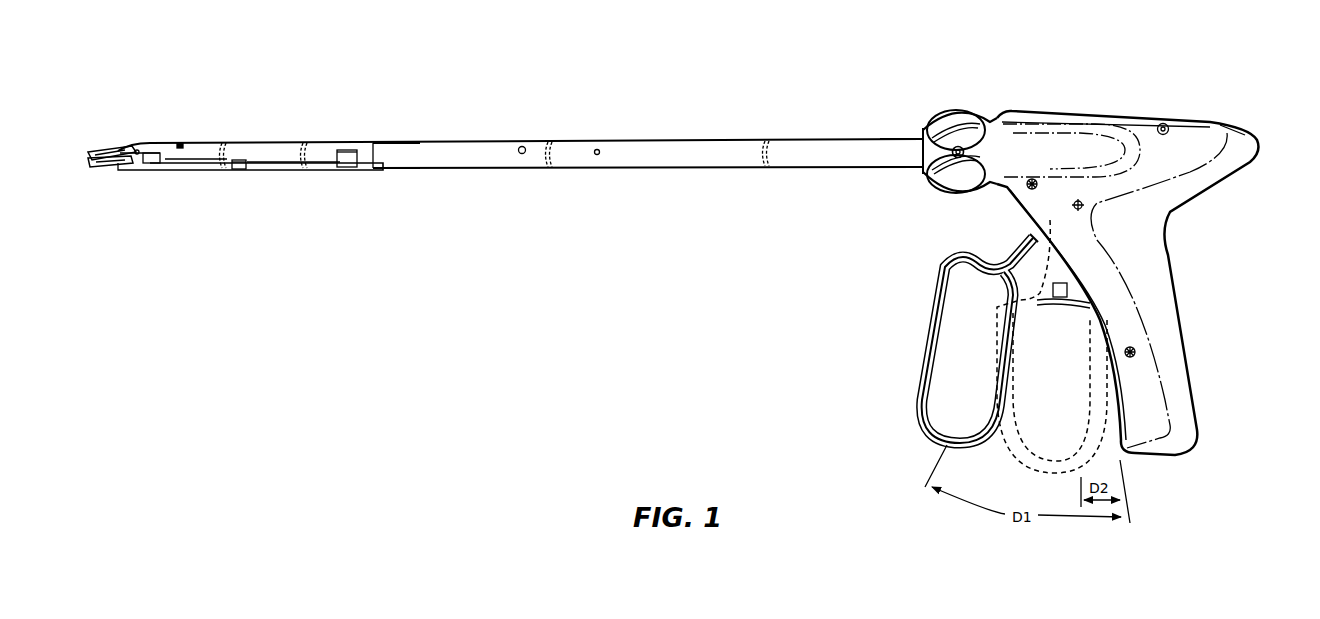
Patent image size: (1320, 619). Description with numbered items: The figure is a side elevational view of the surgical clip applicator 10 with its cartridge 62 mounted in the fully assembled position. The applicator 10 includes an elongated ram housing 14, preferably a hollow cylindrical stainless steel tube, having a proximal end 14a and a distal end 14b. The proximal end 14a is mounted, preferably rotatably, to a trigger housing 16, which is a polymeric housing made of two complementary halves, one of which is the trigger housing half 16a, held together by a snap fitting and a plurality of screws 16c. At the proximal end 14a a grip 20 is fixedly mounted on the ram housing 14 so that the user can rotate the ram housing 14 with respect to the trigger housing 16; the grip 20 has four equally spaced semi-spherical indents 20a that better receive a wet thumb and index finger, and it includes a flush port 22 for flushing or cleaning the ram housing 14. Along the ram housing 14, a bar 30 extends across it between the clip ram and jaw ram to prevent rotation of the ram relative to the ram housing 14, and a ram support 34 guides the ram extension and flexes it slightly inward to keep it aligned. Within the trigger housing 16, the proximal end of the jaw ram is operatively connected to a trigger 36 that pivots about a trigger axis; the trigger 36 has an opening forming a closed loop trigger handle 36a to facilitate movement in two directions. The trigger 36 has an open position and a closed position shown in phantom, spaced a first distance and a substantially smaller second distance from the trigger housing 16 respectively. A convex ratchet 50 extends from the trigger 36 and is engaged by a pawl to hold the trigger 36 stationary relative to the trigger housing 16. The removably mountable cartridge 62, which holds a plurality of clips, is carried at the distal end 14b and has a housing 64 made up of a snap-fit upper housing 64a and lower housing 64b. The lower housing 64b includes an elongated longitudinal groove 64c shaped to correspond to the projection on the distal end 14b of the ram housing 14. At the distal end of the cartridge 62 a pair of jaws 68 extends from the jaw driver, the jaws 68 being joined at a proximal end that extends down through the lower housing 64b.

The surgical clip applicator 10 is at (944, 38).
The ram housing 14 is at (568, 143).
The proximal end of the ram housing 14a is at (909, 136).
The distal end of the ram housing 14b is at (387, 143).
The trigger housing 16 is at (1128, 260).
The trigger housing half 16a is at (1256, 148).
The screws 16c is at (1165, 123).
The grip 20 is at (945, 149).
The semi-spherical indents 20a is at (947, 122).
The flush port 22 is at (925, 160).
The bar 30 is at (598, 156).
The ram support 34 is at (522, 155).
The trigger 36 is at (978, 346).
The closed loop trigger handle 36a is at (921, 354).
The ratchet 50 is at (1073, 313).
The cartridge 62 is at (266, 138).
The housing 64 is at (188, 173).
The upper housing 64a is at (338, 149).
The lower housing 64b is at (128, 147).
The elongated longitudinal groove 64c is at (386, 170).
The jaws 68 is at (98, 153).